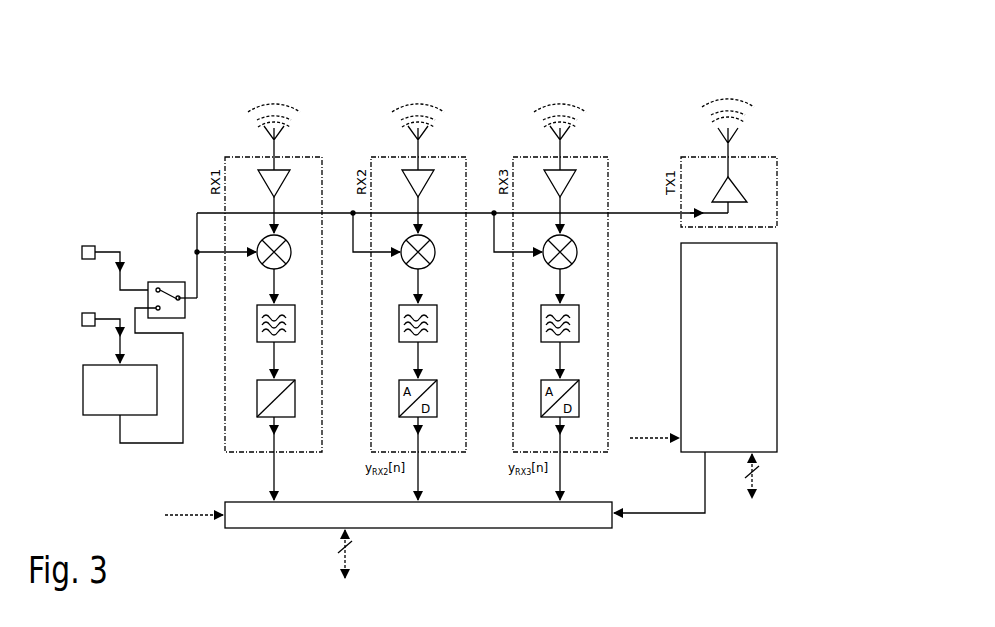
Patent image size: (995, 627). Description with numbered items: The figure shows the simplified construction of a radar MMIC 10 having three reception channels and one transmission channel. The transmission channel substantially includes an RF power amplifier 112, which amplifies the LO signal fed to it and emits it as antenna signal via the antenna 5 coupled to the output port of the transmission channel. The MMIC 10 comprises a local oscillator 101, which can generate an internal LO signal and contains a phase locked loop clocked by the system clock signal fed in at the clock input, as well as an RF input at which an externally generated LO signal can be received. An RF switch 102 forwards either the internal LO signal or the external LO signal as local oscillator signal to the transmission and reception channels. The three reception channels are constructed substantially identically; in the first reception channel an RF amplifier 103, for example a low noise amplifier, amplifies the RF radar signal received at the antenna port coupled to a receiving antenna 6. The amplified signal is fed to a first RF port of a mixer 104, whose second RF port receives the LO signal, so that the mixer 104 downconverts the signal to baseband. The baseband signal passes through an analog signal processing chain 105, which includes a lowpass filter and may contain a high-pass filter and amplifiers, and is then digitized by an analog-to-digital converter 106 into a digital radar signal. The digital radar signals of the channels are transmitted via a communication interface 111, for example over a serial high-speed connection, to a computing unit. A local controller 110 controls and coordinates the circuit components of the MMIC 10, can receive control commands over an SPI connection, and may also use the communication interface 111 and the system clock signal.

The MMIC 10 is at (232, 58).
The antenna 5 is at (740, 139).
The receiving antenna 6 is at (264, 138).
The local oscillator 101 is at (82, 396).
The RF switch 102 is at (184, 335).
The RF amplifier 103 is at (280, 183).
The mixer 104 is at (286, 260).
The analog signal processing chain 105 is at (285, 336).
The analog-to-digital converter 106 is at (288, 420).
The local controller 110 is at (698, 378).
The communication interface 111 is at (386, 537).
The RF power amplifier 112 is at (742, 195).